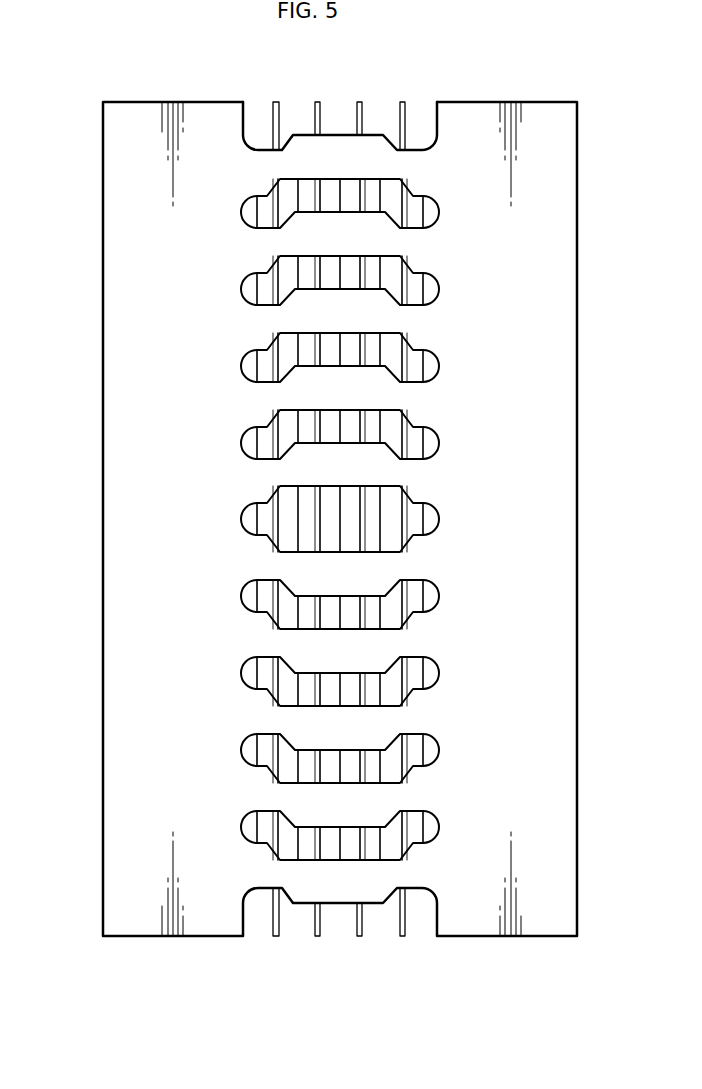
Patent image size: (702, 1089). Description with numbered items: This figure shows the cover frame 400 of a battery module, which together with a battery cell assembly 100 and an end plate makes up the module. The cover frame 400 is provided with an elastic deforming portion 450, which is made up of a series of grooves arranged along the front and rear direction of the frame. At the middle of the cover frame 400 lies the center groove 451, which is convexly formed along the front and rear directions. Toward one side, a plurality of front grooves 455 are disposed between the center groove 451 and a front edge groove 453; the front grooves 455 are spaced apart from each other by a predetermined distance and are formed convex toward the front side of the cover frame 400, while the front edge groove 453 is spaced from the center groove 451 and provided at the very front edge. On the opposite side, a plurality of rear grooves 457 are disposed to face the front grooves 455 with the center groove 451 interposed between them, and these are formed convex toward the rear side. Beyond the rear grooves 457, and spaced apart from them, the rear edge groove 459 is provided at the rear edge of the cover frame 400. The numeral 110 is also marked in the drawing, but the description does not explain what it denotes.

The battery cell assembly 100 is at (273, 945).
The electrode lead 110 is at (262, 829).
The cover frame 400 is at (143, 256).
The elastic deforming portion 450 is at (418, 116).
The center groove 451 is at (243, 518).
The front edge groove 453 is at (337, 905).
The front groove 455 is at (243, 749).
The rear groove 457 is at (243, 360).
The rear edge groove 459 is at (337, 135).